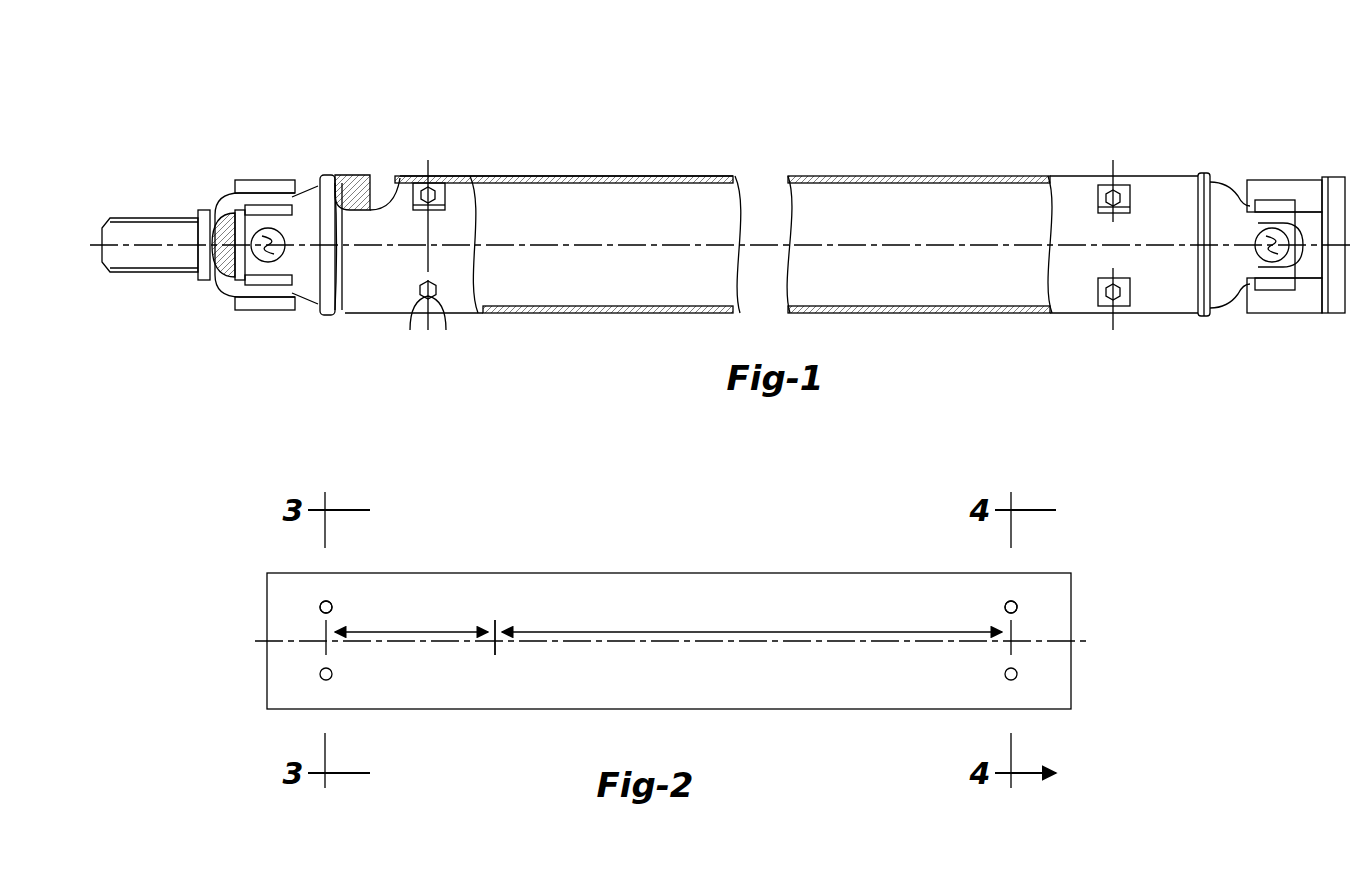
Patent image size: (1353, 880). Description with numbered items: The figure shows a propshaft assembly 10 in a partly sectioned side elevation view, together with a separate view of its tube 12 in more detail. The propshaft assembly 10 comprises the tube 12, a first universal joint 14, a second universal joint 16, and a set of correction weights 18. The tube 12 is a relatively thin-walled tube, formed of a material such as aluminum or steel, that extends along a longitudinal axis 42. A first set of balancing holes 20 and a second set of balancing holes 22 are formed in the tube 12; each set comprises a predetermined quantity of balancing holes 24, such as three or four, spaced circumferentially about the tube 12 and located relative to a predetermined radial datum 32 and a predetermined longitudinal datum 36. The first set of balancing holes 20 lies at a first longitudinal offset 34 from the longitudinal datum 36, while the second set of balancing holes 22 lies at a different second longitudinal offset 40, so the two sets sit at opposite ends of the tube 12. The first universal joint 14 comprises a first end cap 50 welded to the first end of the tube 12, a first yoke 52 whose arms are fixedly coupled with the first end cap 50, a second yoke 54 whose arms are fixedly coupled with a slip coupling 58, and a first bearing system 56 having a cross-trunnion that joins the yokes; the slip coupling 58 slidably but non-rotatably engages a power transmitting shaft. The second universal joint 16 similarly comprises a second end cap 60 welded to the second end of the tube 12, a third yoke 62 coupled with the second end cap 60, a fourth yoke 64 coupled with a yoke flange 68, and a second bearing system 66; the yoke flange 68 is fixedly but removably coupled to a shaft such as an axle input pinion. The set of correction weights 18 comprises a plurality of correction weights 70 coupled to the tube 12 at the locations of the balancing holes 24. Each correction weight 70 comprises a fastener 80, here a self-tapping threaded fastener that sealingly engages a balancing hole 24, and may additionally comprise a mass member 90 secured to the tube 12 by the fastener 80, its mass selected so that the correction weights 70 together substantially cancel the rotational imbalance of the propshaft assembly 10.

In FIG. 1, the propshaft assembly 10 is at (680, 97).
In FIG. 1, the tube 12 is at (556, 320).
In FIG. 2, the tube 12 is at (657, 573).
In FIG. 1, the first universal joint 14 is at (245, 172).
In FIG. 1, the second universal joint 16 is at (1231, 311).
In FIG. 1, the set of correction weights 18 is at (403, 293).
In FIG. 2, the first set of balancing holes 20 is at (340, 604).
In FIG. 2, the second set of balancing holes 22 is at (998, 606).
In FIG. 2, the balancing holes 24 is at (320, 607).
In FIG. 1, the predetermined radial datum 32 is at (796, 272).
In FIG. 2, the predetermined radial datum 32 is at (668, 658).
In FIG. 2, the first longitudinal offset 34 is at (421, 630).
In FIG. 2, the predetermined longitudinal datum 36 is at (493, 652).
In FIG. 2, the second longitudinal offset 40 is at (742, 632).
In FIG. 1, the longitudinal axis 42 is at (643, 247).
In FIG. 2, the longitudinal axis 42 is at (590, 641).
In FIG. 1, the first end cap 50 is at (315, 180).
In FIG. 1, the first yoke 52 is at (303, 270).
In FIG. 1, the second yoke 54 is at (248, 298).
In FIG. 1, the first bearing system 56 is at (277, 288).
In FIG. 1, the slip coupling 58 is at (148, 273).
In FIG. 1, the second end cap 60 is at (1218, 183).
In FIG. 1, the third yoke 62 is at (1238, 262).
In FIG. 1, the fourth yoke 64 is at (1278, 188).
In FIG. 1, the second bearing system 66 is at (1242, 190).
In FIG. 1, the yoke flange 68 is at (1338, 306).
In FIG. 1, the correction weights 70 is at (555, 112).
In FIG. 1, the fastener 80 is at (437, 192).
In FIG. 1, the mass member 90 is at (448, 200).